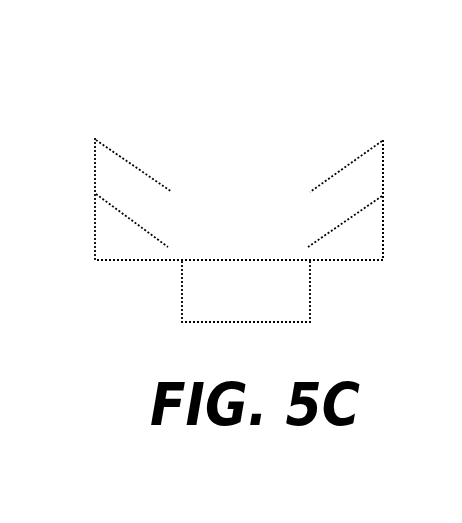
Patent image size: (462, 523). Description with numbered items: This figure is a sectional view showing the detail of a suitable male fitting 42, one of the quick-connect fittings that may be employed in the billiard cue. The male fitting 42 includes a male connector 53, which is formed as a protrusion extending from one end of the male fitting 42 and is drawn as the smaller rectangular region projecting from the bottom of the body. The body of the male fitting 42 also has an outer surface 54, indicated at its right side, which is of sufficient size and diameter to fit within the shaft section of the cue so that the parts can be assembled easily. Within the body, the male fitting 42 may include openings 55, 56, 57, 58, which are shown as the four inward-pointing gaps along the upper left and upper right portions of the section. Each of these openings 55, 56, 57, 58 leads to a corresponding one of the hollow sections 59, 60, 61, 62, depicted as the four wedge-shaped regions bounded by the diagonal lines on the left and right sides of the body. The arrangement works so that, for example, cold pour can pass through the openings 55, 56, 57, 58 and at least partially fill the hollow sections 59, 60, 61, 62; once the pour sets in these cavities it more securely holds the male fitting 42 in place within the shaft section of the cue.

The male fitting 42 is at (367, 118).
The male connector 53 is at (257, 310).
The outer surface 54 is at (383, 213).
The opening 55 is at (175, 212).
The opening 56 is at (168, 255).
The opening 57 is at (318, 210).
The opening 58 is at (312, 255).
The hollow section 59 is at (120, 201).
The hollow section 60 is at (106, 251).
The hollow section 61 is at (337, 200).
The hollow section 62 is at (346, 251).